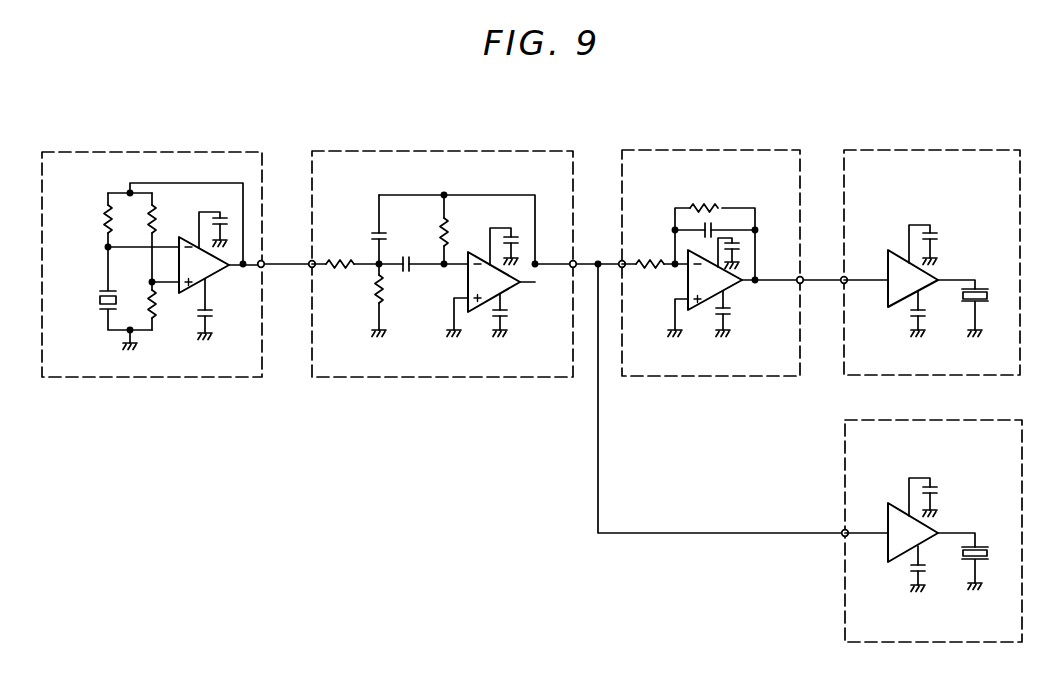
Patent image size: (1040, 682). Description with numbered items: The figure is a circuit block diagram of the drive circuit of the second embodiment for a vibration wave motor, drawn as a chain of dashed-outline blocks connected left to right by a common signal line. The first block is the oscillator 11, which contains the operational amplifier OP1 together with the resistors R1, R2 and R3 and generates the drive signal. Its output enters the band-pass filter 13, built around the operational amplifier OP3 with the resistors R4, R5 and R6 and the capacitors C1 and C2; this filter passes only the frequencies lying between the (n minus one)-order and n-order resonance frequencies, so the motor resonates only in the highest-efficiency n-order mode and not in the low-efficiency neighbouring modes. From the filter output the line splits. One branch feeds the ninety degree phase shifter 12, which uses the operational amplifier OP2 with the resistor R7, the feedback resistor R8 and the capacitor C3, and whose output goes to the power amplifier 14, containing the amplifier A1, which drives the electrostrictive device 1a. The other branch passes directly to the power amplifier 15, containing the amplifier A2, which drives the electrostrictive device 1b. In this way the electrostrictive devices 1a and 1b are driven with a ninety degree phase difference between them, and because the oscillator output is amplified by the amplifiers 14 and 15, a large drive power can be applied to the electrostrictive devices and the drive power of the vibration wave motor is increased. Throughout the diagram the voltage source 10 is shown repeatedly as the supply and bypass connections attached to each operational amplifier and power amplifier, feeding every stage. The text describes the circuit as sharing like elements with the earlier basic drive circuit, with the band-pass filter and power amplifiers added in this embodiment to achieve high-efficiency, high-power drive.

The oscillator 11 is at (245, 152).
The band-pass filter 13 is at (563, 151).
The 90° phase shifter 12 is at (787, 150).
The power amplifier 14 is at (1006, 150).
The power amplifier 15 is at (1012, 419).
The voltage source 10 is at (225, 216).
The electrostrictive device 1a is at (980, 312).
The electrostrictive device 1b is at (980, 566).
The resistor R1 is at (100, 227).
The resistor R2 is at (157, 219).
The resistor R3 is at (158, 301).
The resistor R4 is at (338, 258).
The resistor R5 is at (375, 289).
The resistor R6 is at (449, 235).
The resistor R7 is at (648, 258).
The resistor R8 is at (706, 204).
The capacitor C1 is at (404, 273).
The capacitor C2 is at (385, 234).
The capacitor C3 is at (714, 222).
The operational amplifier OP1 is at (211, 276).
The operational amplifier OP2 is at (734, 282).
The operational amplifier OP3 is at (513, 282).
The amplifier A1 is at (887, 260).
The amplifier A2 is at (888, 515).